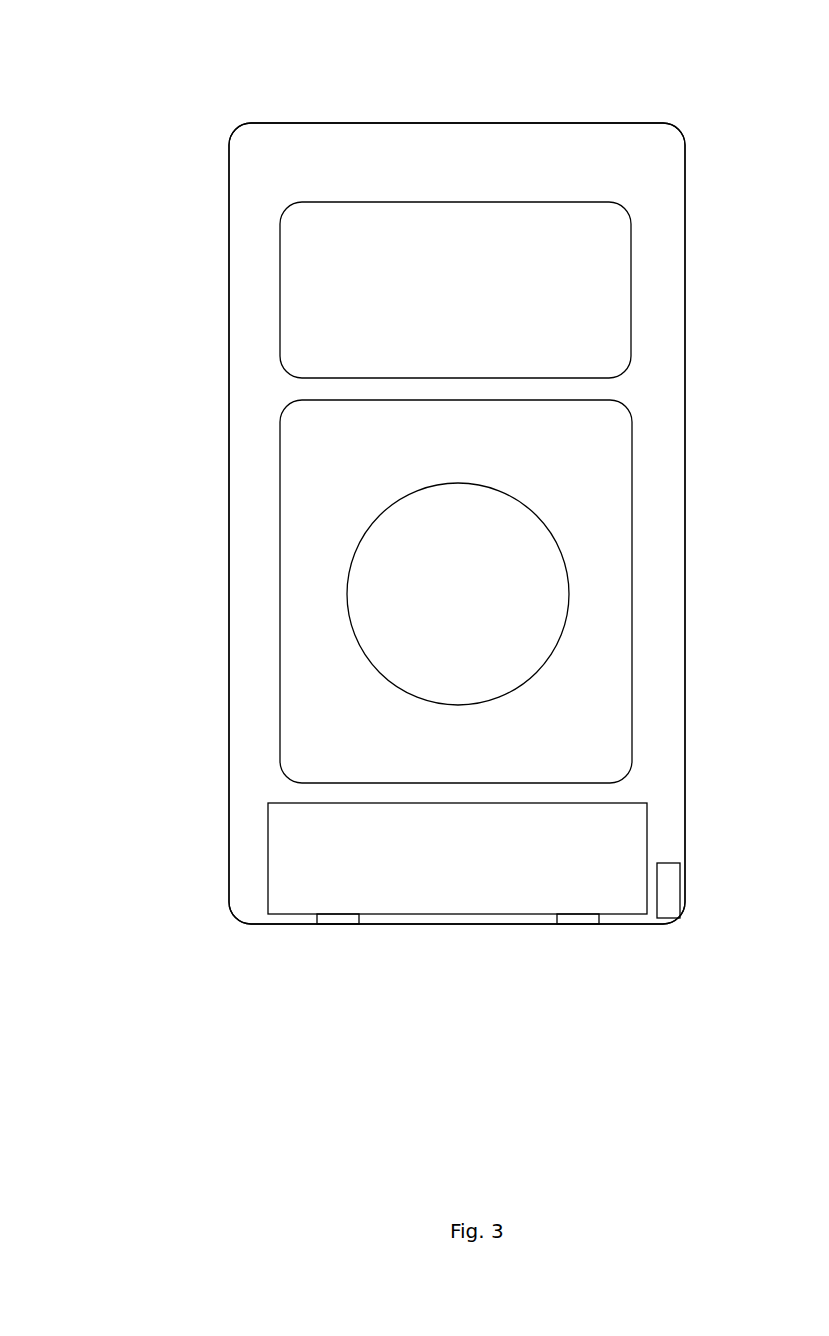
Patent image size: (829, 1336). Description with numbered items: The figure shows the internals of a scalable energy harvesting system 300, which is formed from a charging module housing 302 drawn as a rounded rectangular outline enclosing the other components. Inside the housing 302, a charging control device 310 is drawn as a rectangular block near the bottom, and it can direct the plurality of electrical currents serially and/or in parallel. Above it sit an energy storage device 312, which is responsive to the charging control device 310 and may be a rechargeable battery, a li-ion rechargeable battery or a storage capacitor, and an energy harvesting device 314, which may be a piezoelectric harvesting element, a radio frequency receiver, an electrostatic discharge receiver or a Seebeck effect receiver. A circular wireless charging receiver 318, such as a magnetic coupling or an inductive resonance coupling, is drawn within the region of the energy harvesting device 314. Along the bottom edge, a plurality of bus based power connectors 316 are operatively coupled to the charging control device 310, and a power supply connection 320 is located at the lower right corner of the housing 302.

The scalable energy harvesting system 300 is at (688, 75).
The charging module housing 302 is at (229, 178).
The charging control device 310 is at (268, 858).
The energy storage device 312 is at (280, 292).
The energy harvesting device 314 is at (280, 590).
The bus based power connectors 316 is at (557, 926).
The wireless charging receiver 318 is at (347, 595).
The power supply connection 320 is at (665, 920).